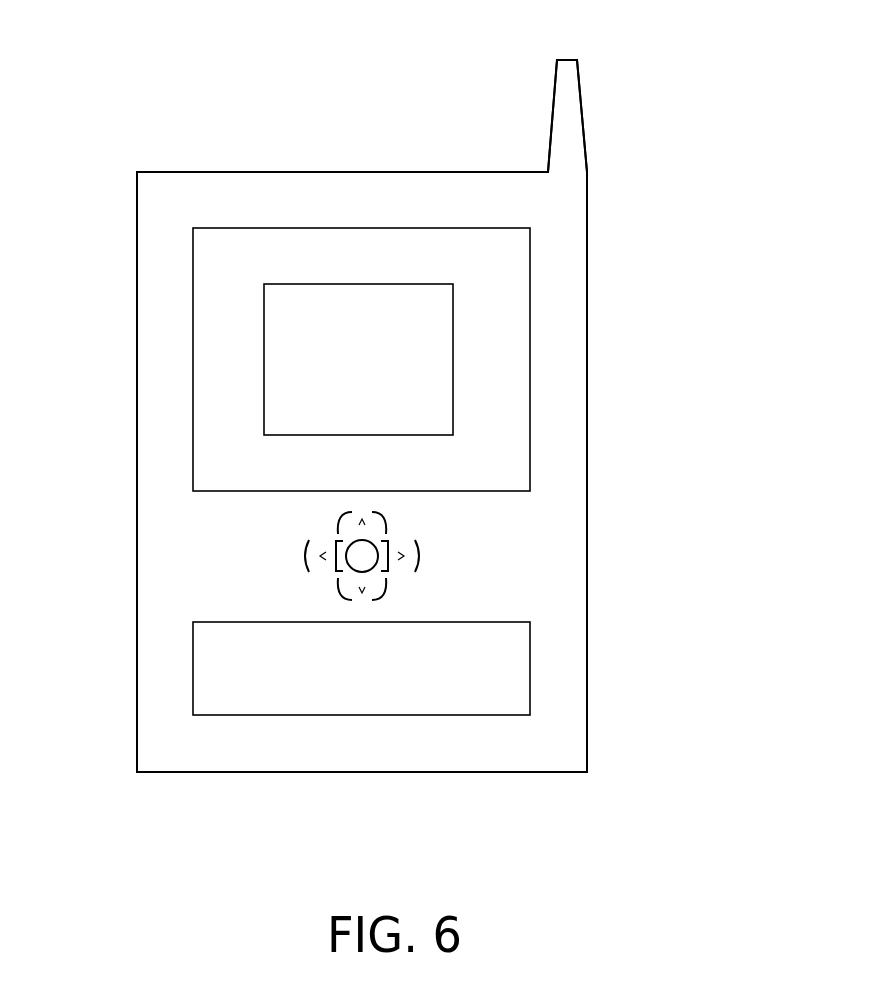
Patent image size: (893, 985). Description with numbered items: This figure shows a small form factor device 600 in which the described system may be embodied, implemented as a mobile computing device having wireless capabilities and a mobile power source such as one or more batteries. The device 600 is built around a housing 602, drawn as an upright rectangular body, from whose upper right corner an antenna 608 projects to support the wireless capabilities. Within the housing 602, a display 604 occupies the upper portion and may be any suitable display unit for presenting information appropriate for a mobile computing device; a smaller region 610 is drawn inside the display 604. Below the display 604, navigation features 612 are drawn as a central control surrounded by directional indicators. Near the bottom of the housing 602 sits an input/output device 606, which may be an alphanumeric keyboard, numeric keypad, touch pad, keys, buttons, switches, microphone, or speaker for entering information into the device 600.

The small form factor device 600 is at (153, 77).
The housing 602 is at (587, 472).
The display 604 is at (530, 248).
The input/output (I/O) device 606 is at (530, 660).
The antenna 608 is at (553, 108).
The display window 610 is at (453, 378).
The navigation features 612 is at (433, 549).